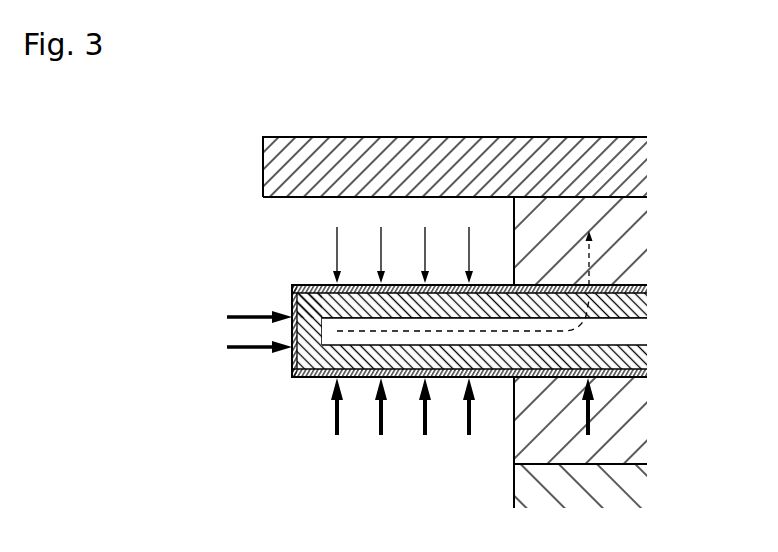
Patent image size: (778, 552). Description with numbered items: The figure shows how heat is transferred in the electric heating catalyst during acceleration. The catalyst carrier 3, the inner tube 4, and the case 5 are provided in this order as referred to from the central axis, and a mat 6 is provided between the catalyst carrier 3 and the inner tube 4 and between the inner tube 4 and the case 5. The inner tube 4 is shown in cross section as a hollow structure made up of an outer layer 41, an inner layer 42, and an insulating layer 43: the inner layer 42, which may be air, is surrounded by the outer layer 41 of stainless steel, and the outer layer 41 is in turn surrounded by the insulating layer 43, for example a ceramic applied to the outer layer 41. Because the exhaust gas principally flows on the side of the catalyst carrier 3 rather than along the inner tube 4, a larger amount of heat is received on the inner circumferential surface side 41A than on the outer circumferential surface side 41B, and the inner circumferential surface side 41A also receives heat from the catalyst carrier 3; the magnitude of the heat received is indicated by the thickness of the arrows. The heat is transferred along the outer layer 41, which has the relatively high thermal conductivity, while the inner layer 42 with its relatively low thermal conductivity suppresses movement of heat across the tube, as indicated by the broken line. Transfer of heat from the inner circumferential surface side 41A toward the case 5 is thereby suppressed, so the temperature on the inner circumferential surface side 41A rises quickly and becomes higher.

The catalyst carrier 3 is at (632, 494).
The inner tube 4 is at (501, 352).
The case 5 is at (633, 171).
The mat 6 is at (633, 241).
The outer layer 41 is at (633, 303).
The inner circumferential surface side 41A is at (362, 377).
The outer circumferential surface side 41B is at (363, 296).
The inner layer 42 is at (633, 336).
The insulating layer 43 is at (521, 364).